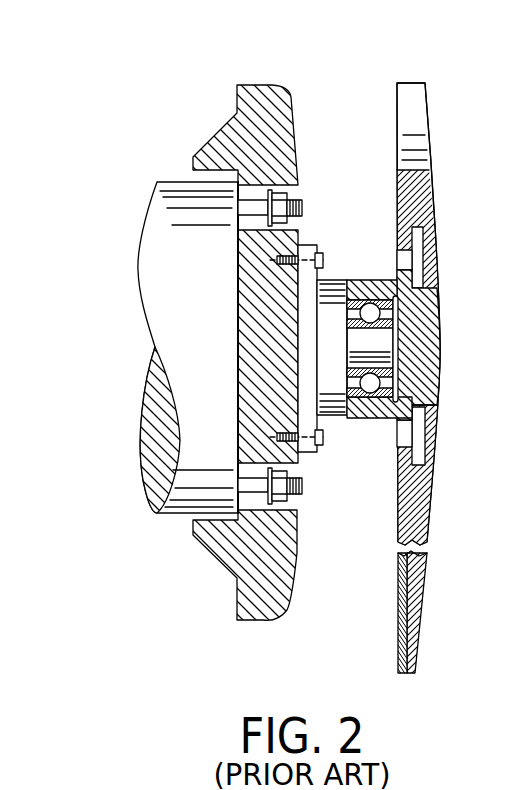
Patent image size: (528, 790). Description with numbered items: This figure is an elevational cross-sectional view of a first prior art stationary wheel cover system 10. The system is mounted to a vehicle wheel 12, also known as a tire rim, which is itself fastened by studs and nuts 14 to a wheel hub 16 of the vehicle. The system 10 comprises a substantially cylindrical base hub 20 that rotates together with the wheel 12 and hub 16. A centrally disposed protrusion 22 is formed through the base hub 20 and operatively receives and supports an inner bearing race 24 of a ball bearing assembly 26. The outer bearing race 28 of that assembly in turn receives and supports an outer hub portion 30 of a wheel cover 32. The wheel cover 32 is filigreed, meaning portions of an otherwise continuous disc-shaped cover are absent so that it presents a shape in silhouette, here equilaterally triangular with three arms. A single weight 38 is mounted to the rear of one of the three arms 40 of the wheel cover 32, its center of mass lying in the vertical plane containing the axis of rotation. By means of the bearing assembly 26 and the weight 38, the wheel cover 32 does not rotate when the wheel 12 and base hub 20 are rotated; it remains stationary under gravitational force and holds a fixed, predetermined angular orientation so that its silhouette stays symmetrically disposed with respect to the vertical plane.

The stationary wheel cover system 10 is at (452, 72).
The vehicle wheel 12 is at (292, 100).
The studs and nuts 14 is at (299, 201).
The wheel hub 16 is at (138, 247).
The base hub 20 is at (335, 418).
The protrusion 22 is at (423, 363).
The inner bearing race 24 is at (390, 344).
The ball bearing assembly 26 is at (435, 403).
The outer bearing race 28 is at (410, 297).
The outer hub portion 30 is at (393, 280).
The wheel cover 32 is at (433, 177).
The weight 38 is at (398, 608).
The arm 40 is at (423, 595).